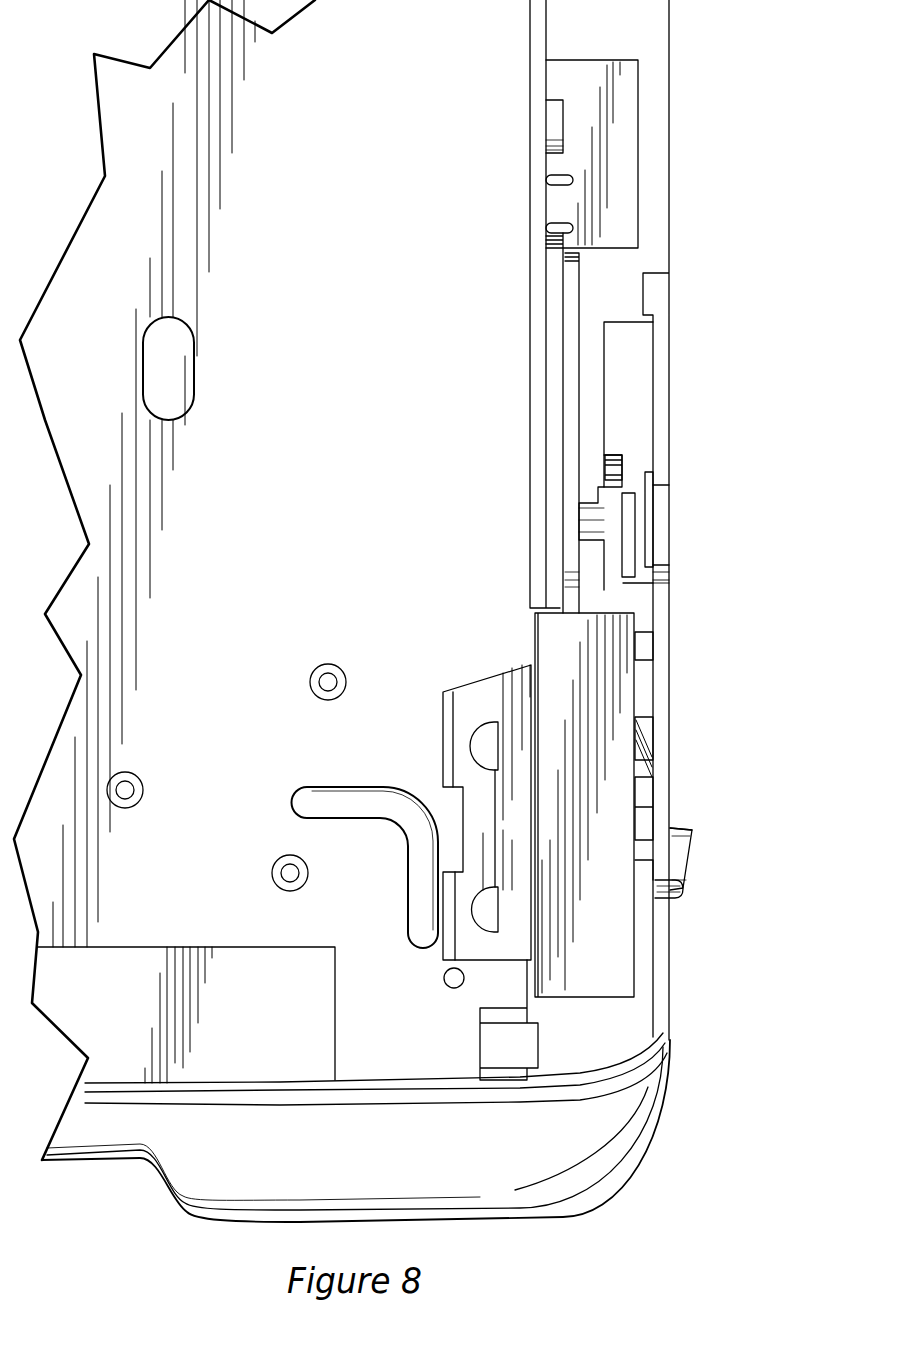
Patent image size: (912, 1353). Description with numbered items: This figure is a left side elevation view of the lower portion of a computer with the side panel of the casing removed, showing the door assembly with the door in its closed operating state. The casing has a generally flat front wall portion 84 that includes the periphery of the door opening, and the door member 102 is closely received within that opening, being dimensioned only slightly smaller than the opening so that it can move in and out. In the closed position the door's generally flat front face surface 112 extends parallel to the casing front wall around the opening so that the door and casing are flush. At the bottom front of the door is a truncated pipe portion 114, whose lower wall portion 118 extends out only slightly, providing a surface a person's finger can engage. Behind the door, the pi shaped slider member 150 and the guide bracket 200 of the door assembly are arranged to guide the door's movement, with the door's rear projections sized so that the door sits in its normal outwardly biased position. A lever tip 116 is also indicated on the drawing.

The casing front wall portion 84 is at (672, 512).
The door member 102 is at (670, 678).
The door front face surface 112 is at (672, 583).
The truncated pipe portion 114 is at (690, 847).
The lever tip 116 is at (690, 830).
The lower wall portion 118 is at (680, 895).
The slider member 150 is at (615, 487).
The guide bracket 200 is at (545, 591).